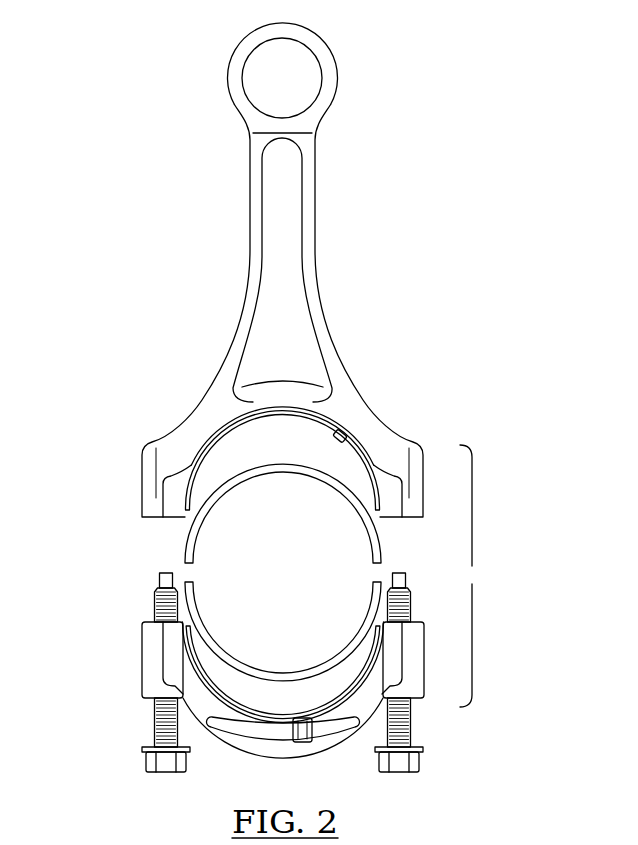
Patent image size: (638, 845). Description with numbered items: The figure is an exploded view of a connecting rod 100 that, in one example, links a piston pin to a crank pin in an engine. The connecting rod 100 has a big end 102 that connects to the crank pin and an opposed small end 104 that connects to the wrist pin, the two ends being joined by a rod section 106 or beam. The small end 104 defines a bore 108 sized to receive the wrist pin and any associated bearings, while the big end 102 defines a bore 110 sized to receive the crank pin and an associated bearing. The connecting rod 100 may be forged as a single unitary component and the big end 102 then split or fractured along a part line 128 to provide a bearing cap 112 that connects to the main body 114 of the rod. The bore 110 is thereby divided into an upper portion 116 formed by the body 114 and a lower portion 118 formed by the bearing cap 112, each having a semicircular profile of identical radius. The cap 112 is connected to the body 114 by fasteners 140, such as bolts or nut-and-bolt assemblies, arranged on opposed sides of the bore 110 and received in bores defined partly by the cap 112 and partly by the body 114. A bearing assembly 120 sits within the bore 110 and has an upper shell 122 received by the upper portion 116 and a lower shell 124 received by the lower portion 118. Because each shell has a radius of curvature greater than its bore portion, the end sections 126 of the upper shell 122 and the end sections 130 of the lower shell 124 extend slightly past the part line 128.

The connecting rod 100 is at (460, 134).
The big end 102 is at (472, 566).
The small end 104 is at (156, 140).
The rod section 106 is at (328, 267).
The body 114 is at (313, 240).
The bore 108 is at (305, 79).
The bore 110 is at (345, 566).
The upper portion 116 is at (337, 432).
The lower portion 118 is at (333, 689).
The bearing cap 112 is at (288, 747).
The bearing assembly 120 is at (187, 583).
The upper shell 122 is at (367, 542).
The lower shell 124 is at (368, 605).
The end sections 126 is at (195, 552).
The part line 128 is at (150, 620).
The end sections 130 is at (193, 588).
The fasteners 140 is at (163, 772).